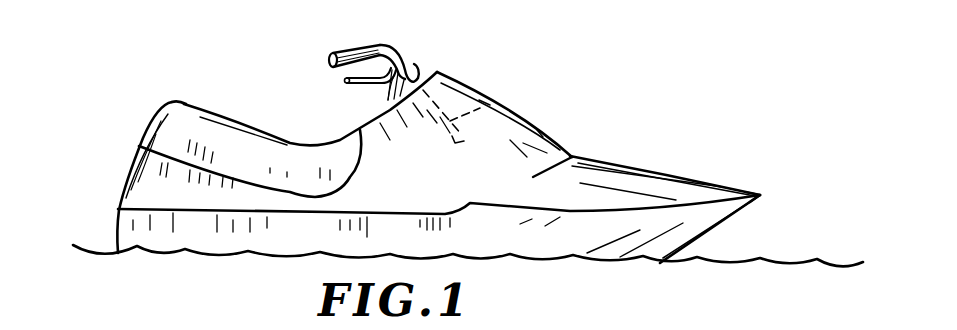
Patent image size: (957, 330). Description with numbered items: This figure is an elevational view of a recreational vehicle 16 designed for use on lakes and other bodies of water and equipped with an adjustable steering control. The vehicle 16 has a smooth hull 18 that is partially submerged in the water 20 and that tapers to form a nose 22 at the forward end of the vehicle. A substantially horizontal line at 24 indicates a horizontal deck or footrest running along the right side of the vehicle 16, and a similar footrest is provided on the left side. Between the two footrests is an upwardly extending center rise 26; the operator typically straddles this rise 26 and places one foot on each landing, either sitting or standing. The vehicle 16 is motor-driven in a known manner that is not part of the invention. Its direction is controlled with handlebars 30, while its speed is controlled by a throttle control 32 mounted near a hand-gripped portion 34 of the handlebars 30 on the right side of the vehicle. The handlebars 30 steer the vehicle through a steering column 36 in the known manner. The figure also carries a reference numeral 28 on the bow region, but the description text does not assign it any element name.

The recreational vehicle 16 is at (652, 118).
The hull 18 is at (683, 181).
The water 20 is at (793, 265).
The nose 22 is at (752, 192).
The horizontal deck or footrest 24 is at (405, 214).
The center rise 26 is at (285, 140).
The bow 28 is at (180, 102).
The handlebars 30 is at (400, 67).
The throttle control 32 is at (350, 86).
The hand-gripped portion 34 is at (345, 53).
The steering column 36 is at (487, 98).